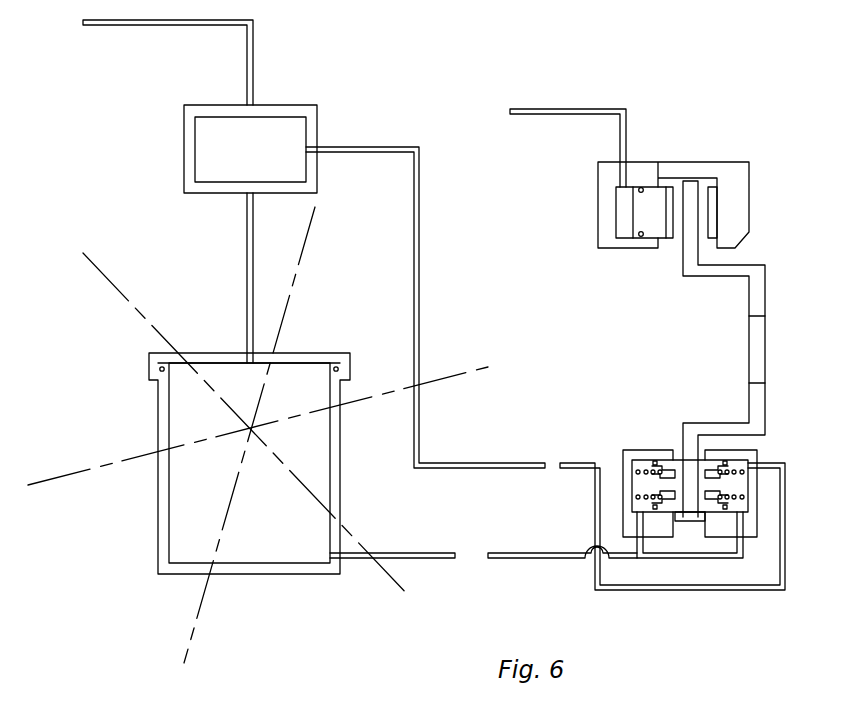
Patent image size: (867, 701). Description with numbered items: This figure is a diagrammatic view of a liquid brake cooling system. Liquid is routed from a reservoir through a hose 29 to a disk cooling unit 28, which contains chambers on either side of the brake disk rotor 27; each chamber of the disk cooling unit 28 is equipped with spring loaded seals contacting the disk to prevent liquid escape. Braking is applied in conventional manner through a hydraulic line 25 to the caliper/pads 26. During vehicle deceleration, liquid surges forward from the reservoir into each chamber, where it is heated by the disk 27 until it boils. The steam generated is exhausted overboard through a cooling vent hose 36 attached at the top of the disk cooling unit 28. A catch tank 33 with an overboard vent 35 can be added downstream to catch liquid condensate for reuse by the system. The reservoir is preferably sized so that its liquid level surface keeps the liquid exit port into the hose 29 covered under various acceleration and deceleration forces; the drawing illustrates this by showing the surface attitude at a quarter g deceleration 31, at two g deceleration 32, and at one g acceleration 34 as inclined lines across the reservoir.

The hydraulic line 25 is at (610, 108).
The caliper/pads 26 is at (715, 161).
The brake disk rotor 27 is at (767, 277).
The disk cooling unit 28 is at (757, 450).
The hose 29 is at (437, 559).
The surface attitude at 0.25 g deceleration 31 is at (65, 475).
The surface attitude at 2.0 g deceleration 32 is at (195, 630).
The catch tank 33 is at (315, 125).
The surface attitude at 1.0 g acceleration 34 is at (105, 277).
The overboard vent 35 is at (253, 50).
The cooling vent hose 36 is at (419, 165).